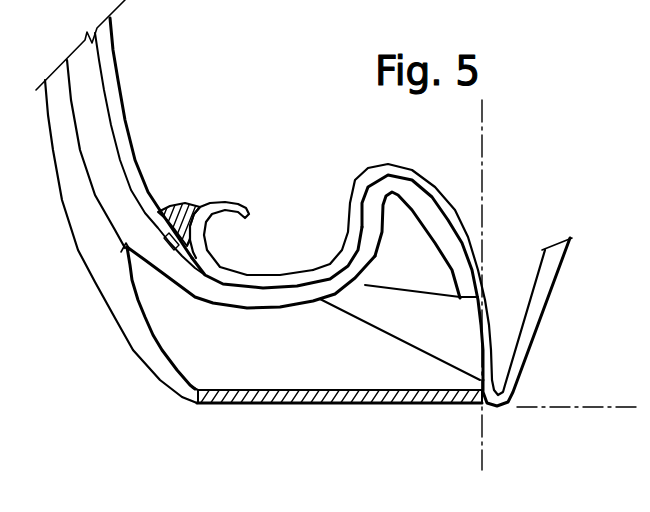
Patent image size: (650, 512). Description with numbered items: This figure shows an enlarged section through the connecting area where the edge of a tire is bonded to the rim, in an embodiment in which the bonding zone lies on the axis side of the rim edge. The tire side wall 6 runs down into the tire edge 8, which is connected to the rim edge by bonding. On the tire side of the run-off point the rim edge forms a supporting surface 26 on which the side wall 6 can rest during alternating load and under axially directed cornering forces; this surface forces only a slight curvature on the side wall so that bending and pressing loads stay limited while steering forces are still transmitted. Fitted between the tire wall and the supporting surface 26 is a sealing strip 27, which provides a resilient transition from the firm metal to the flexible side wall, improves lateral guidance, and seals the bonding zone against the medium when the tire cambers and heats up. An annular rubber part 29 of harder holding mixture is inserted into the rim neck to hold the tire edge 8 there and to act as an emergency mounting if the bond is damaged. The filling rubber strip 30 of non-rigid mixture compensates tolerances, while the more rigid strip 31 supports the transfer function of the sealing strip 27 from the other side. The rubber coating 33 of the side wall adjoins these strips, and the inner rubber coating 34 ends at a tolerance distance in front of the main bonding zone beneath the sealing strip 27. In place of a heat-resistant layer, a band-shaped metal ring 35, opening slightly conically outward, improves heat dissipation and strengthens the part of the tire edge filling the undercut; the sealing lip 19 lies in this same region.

The side wall 6 is at (148, 258).
The tire edge 8 is at (224, 305).
The sealing lip 19 is at (215, 292).
The supporting surface 26 is at (198, 240).
The sealing strip 27 is at (190, 230).
The annular rubber part 29 is at (410, 223).
The filling rubber strip 30 is at (385, 313).
The strip 31 is at (272, 365).
The rubber coating 33 is at (112, 272).
The inner rubber coating 34 is at (113, 122).
The band-shaped metal ring 35 is at (313, 407).